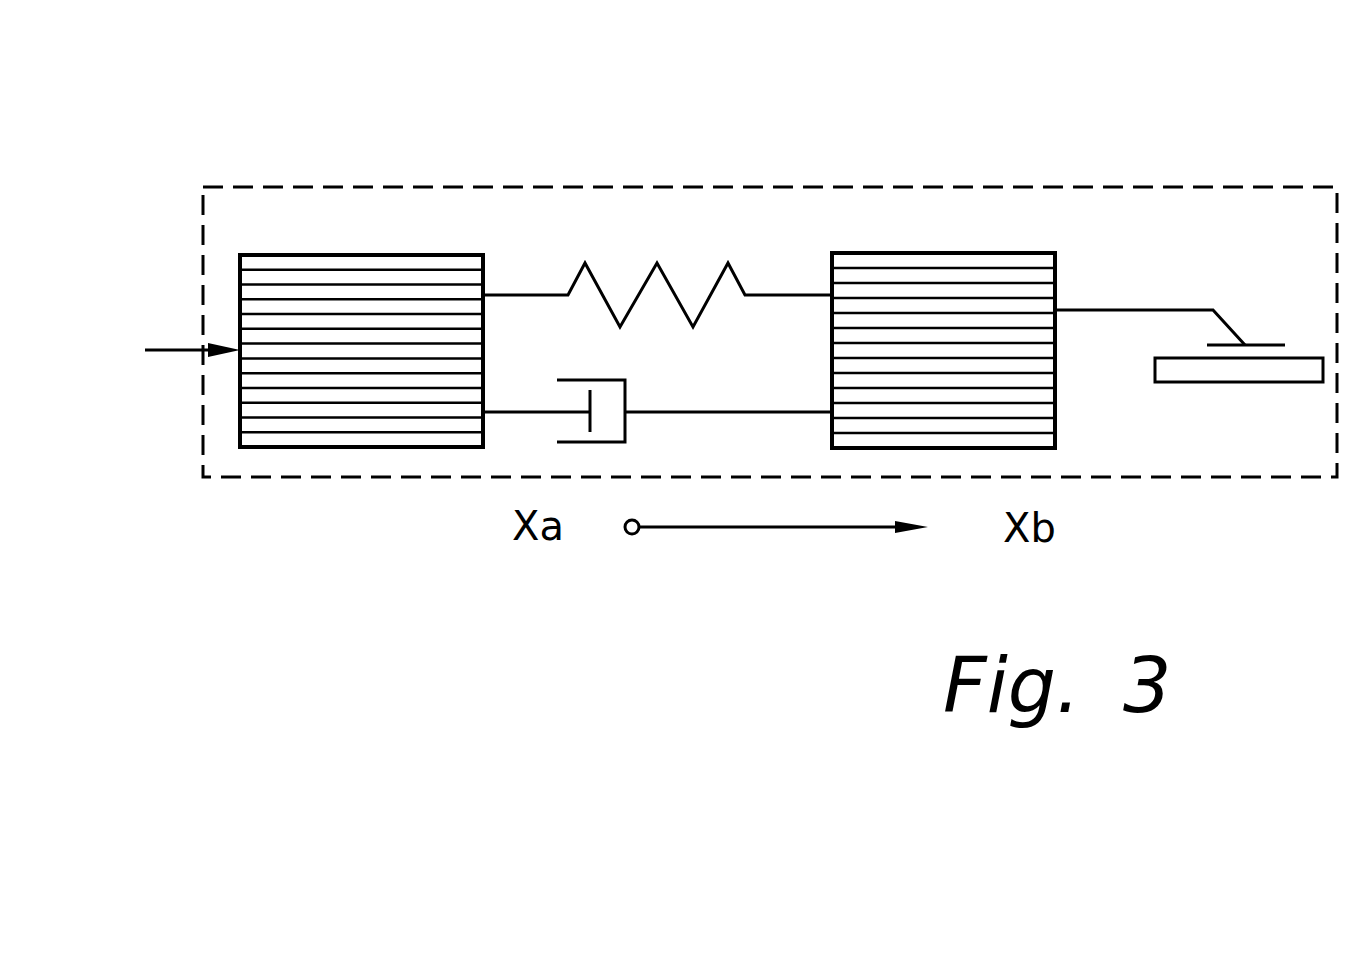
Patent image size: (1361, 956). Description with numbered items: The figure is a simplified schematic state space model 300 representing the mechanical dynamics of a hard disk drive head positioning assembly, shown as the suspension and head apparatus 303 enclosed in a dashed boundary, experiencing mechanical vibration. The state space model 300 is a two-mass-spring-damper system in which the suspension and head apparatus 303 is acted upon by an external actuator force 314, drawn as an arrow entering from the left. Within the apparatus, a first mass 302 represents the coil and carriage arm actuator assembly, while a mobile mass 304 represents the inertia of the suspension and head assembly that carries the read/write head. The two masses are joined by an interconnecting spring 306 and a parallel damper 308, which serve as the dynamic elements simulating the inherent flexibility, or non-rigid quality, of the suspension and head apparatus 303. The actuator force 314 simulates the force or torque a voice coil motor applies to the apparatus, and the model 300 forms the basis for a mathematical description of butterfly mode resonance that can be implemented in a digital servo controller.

The state space model 300 is at (812, 65).
The mass 302 is at (430, 253).
The suspension and head apparatus 303 is at (1228, 187).
The mobile mass 304 is at (1013, 253).
The spring 306 is at (745, 263).
The damper 308 is at (601, 443).
The actuator force 314 is at (168, 350).